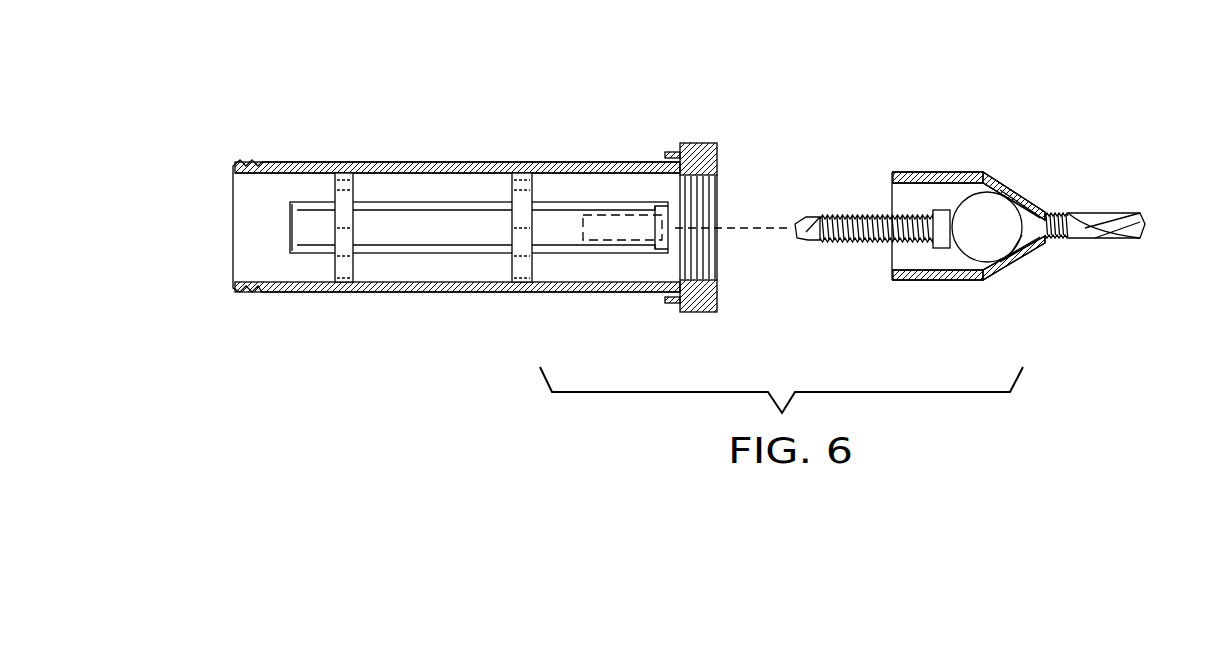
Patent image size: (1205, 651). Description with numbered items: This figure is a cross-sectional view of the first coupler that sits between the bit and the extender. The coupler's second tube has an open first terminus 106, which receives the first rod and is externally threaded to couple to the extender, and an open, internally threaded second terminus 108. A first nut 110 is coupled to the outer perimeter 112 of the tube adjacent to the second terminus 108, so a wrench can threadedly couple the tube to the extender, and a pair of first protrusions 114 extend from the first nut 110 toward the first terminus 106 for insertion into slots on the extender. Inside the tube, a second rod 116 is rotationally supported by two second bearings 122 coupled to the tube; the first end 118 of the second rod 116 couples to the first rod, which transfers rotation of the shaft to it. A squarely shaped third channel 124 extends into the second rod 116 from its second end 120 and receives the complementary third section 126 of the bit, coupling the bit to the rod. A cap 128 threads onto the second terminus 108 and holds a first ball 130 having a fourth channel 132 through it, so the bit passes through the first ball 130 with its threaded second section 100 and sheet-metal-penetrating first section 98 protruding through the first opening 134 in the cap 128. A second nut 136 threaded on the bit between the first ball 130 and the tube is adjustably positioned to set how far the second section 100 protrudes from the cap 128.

The first section 98 is at (1117, 217).
The second section 100 is at (860, 215).
The first terminus 106 is at (232, 222).
The second terminus 108 is at (717, 290).
The first nut 110 is at (700, 143).
The outer perimeter 112 is at (628, 162).
The first protrusions 114 is at (668, 152).
The second rod 116 is at (428, 220).
The first end 118 is at (293, 230).
The second end 120 is at (665, 228).
The second bearings 122 is at (522, 250).
The third channel 124 is at (628, 233).
The third section 126 is at (803, 218).
The cap 128 is at (983, 172).
The first ball 130 is at (1007, 195).
The fourth channel 132 is at (992, 245).
The first opening 134 is at (1058, 210).
The second nut 136 is at (941, 210).